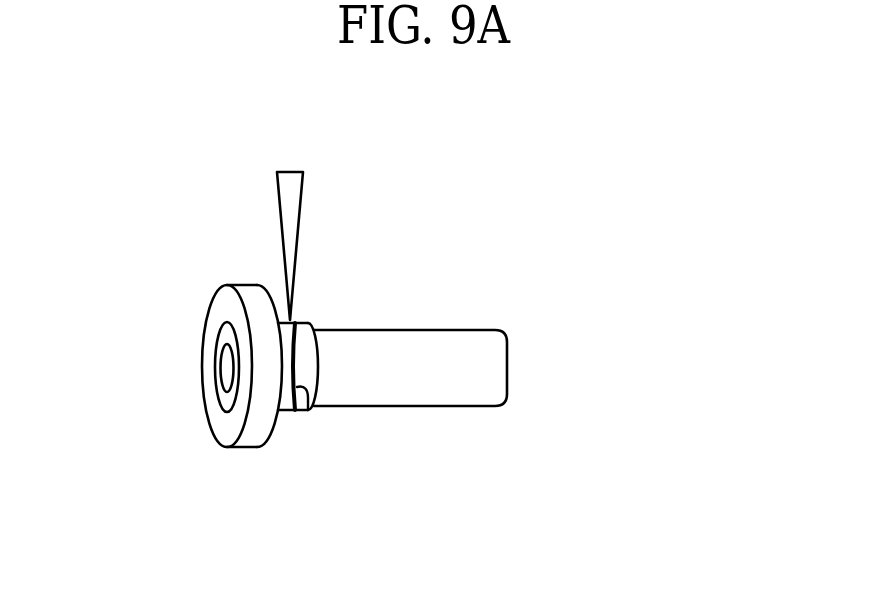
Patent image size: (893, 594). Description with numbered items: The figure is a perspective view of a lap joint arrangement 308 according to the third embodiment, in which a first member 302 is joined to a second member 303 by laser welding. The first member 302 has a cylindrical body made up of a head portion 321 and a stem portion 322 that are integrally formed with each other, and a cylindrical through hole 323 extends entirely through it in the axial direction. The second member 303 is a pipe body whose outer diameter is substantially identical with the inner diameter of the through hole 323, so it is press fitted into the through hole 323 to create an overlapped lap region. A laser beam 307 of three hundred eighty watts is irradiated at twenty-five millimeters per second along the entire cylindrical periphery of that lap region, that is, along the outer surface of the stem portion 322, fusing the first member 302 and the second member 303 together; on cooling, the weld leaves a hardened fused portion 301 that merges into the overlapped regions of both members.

The fused portion 301 is at (297, 418).
The first member 302 is at (228, 424).
The second member 303 is at (473, 370).
The laser beam 307 is at (293, 207).
The lap joint arrangement 308 is at (500, 279).
The head portion 321 is at (252, 450).
The stem portion 322 is at (313, 368).
The through hole 323 is at (222, 372).